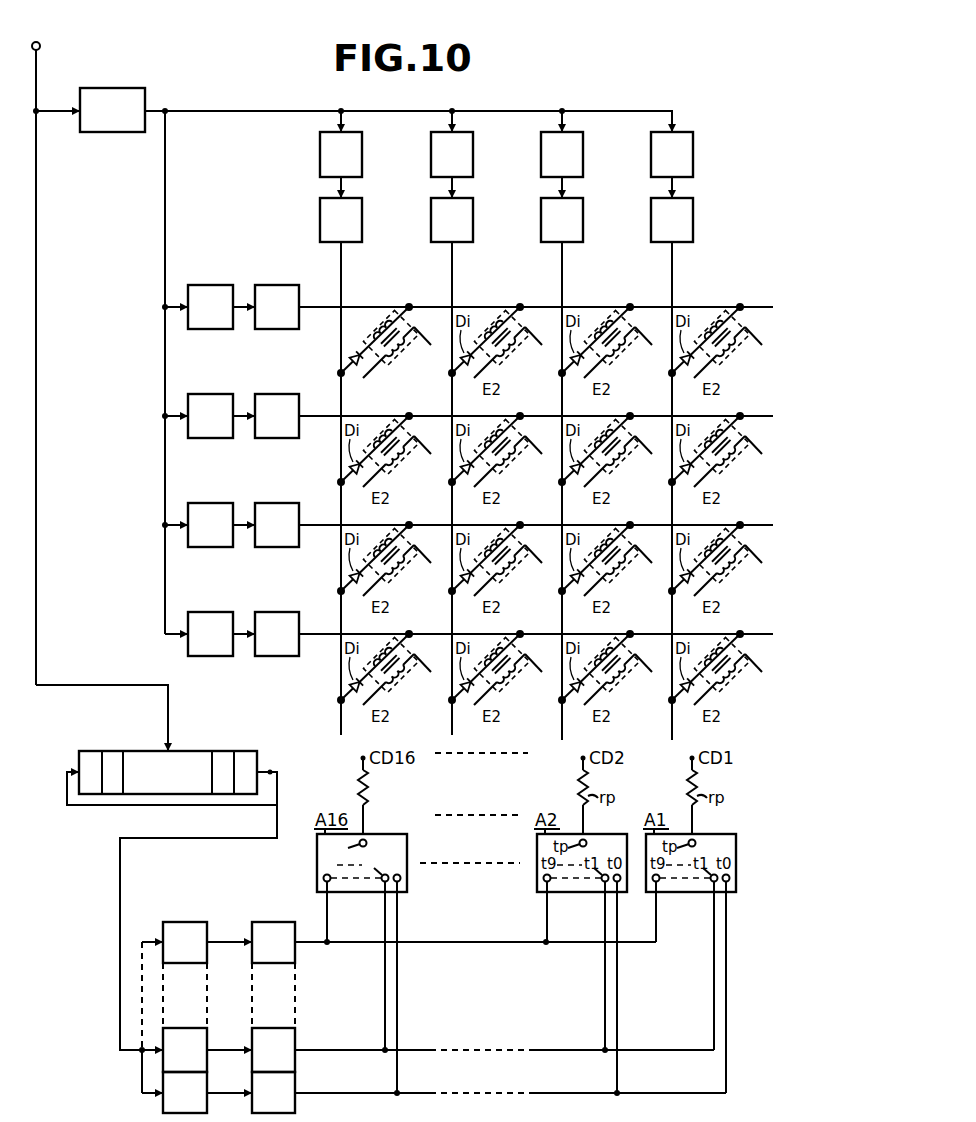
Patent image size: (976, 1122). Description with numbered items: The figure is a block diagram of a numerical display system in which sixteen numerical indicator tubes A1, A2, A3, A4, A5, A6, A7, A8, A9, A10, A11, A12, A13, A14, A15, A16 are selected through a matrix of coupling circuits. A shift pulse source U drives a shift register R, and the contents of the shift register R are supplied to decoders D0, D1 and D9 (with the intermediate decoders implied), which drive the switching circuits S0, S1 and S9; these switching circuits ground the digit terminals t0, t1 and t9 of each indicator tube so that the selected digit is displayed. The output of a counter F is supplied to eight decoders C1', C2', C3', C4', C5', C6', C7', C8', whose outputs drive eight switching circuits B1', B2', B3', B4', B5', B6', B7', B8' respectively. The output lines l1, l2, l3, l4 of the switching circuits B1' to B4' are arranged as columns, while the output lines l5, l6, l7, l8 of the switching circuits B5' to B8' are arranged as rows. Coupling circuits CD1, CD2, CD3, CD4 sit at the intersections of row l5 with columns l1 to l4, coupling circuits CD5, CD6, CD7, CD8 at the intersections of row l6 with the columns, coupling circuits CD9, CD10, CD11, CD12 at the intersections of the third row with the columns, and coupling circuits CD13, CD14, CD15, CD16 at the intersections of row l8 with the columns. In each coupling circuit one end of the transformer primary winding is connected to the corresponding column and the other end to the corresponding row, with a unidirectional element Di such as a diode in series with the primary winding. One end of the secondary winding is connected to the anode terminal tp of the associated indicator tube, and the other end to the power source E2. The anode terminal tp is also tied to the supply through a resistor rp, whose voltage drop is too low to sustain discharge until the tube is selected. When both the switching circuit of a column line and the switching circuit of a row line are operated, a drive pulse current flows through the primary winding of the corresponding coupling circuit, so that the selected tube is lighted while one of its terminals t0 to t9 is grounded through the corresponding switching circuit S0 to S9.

The shift pulse source U is at (40, 46).
The counter F is at (112, 110).
The shift register R is at (198, 751).
The decoder C1' is at (341, 154).
The decoder C2' is at (452, 154).
The decoder C3' is at (562, 154).
The decoder C4' is at (672, 154).
The decoder C5' is at (210, 307).
The decoder C6' is at (210, 416).
The decoder C7' is at (210, 525).
The decoder C8' is at (210, 634).
The switching circuit B1' is at (341, 220).
The switching circuit B2' is at (452, 220).
The switching circuit B3' is at (562, 220).
The switching circuit B4' is at (672, 220).
The switching circuit B5' is at (277, 307).
The switching circuit B6' is at (277, 416).
The switching circuit B7' is at (277, 525).
The switching circuit B8' is at (277, 634).
The output line l1 is at (342, 280).
The output line l2 is at (453, 280).
The output line l3 is at (563, 280).
The output line l4 is at (673, 280).
The output line l5 is at (321, 307).
The output line l6 is at (321, 416).
The output line l7 is at (321, 525).
The output line l8 is at (321, 634).
The unidirectional element Di is at (353, 353).
The power source E2 is at (376, 377).
The coupling circuit CD1 is at (390, 340).
The coupling circuit CD2 is at (501, 340).
The coupling circuit CD3 is at (611, 340).
The coupling circuit CD4 is at (721, 340).
The coupling circuit CD5 is at (390, 449).
The coupling circuit CD6 is at (501, 449).
The coupling circuit CD7 is at (611, 449).
The coupling circuit CD8 is at (721, 449).
The coupling circuit CD9 is at (390, 558).
The coupling circuit CD10 is at (506, 558).
The coupling circuit CD11 is at (616, 558).
The coupling circuit CD12 is at (726, 558).
The coupling circuit CD13 is at (395, 667).
The coupling circuit CD14 is at (506, 667).
The coupling circuit CD15 is at (616, 667).
The coupling circuit CD16 is at (726, 667).
The numerical indicator tube A1 is at (412, 353).
The numerical indicator tube A2 is at (523, 353).
The numerical indicator tube A3 is at (633, 353).
The numerical indicator tube A4 is at (743, 353).
The numerical indicator tube A5 is at (412, 462).
The numerical indicator tube A6 is at (523, 462).
The numerical indicator tube A7 is at (633, 462).
The numerical indicator tube A8 is at (743, 462).
The numerical indicator tube A9 is at (412, 571).
The numerical indicator tube A10 is at (528, 571).
The numerical indicator tube A11 is at (638, 571).
The numerical indicator tube A12 is at (748, 571).
The numerical indicator tube A13 is at (417, 680).
The numerical indicator tube A14 is at (528, 680).
The numerical indicator tube A15 is at (638, 680).
The numerical indicator tube A16 is at (748, 680).
The resistor rp is at (368, 796).
The anode terminal tp is at (350, 847).
The terminal t9 is at (328, 868).
The terminal t1 is at (376, 868).
The terminal t0 is at (394, 868).
The decoder D9 is at (185, 942).
The decoder D1 is at (185, 1050).
The decoder D0 is at (185, 1092).
The switching circuit S9 is at (273, 942).
The switching circuit S1 is at (273, 1050).
The switching circuit S0 is at (273, 1092).